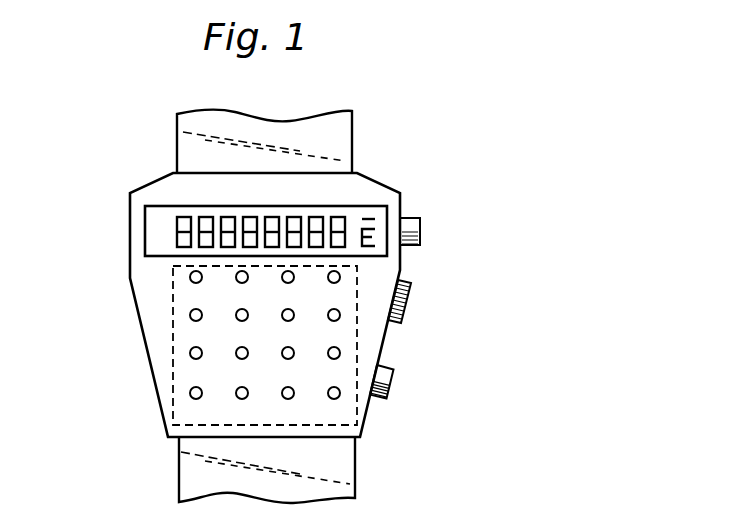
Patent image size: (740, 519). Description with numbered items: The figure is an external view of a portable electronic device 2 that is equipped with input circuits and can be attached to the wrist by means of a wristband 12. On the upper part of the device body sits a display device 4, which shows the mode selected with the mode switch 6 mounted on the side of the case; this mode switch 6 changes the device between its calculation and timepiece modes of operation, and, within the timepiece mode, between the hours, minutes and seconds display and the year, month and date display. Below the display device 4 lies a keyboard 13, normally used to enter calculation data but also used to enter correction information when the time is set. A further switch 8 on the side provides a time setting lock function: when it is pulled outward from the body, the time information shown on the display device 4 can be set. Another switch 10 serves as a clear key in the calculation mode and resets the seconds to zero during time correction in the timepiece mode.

The portable electronic device 2 is at (127, 226).
The display device 4 is at (374, 206).
The mode switch 6 is at (420, 231).
The switch 8 is at (417, 301).
The switch 10 is at (396, 383).
The wristband 12 is at (352, 134).
The keyboard 13 is at (173, 341).